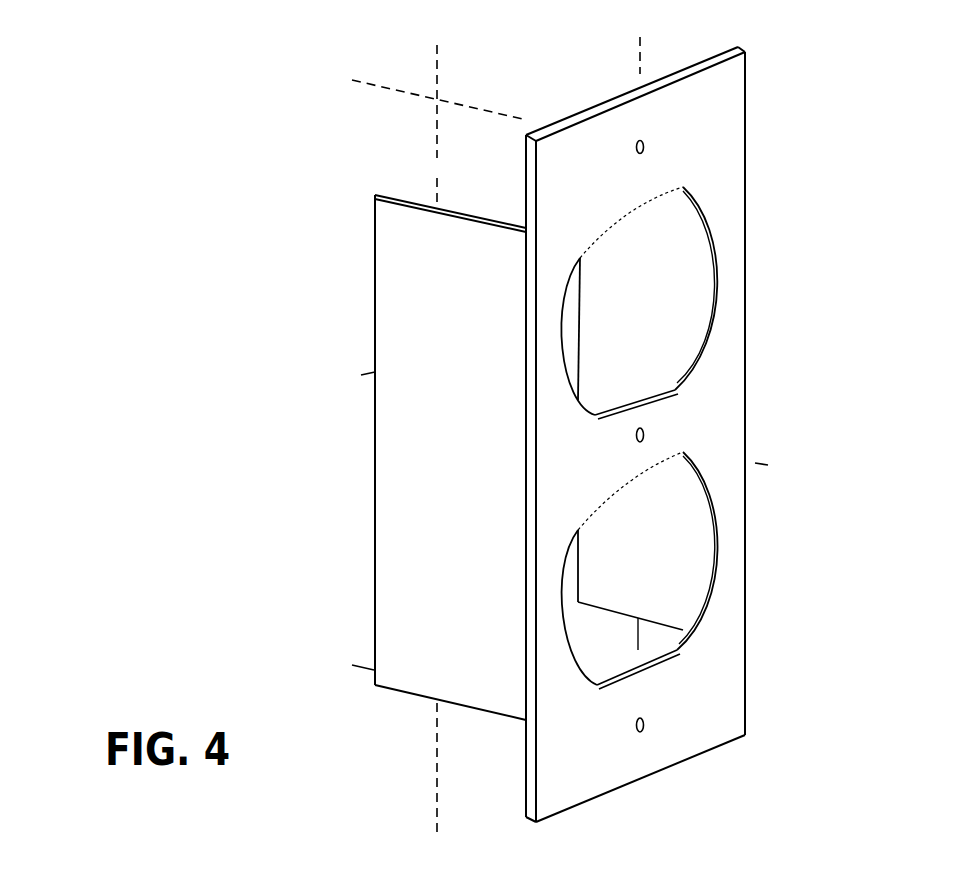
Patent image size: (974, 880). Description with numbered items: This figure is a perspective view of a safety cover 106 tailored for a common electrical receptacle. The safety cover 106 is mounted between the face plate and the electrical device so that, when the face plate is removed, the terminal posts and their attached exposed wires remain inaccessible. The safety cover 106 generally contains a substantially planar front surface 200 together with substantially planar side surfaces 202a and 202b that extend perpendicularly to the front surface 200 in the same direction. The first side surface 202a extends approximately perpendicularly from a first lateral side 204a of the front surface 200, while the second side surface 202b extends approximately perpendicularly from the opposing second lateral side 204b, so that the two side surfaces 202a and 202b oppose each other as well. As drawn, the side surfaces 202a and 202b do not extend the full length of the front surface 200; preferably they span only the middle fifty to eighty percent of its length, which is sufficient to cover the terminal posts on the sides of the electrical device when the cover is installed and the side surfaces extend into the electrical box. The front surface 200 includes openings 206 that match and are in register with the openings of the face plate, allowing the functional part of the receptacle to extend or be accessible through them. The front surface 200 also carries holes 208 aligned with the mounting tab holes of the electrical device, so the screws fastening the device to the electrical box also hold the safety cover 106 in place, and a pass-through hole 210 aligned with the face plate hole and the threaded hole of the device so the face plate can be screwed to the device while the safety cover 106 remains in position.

The safety cover 106 is at (788, 138).
The front surface 200 is at (573, 434).
The first side surface 202a is at (425, 470).
The second side surface 202b is at (672, 260).
The first lateral side 204a is at (532, 532).
The second lateral side 204b is at (745, 308).
The opening 206 is at (610, 647).
The hole 208 is at (645, 722).
The pass-through hole 210 is at (647, 435).